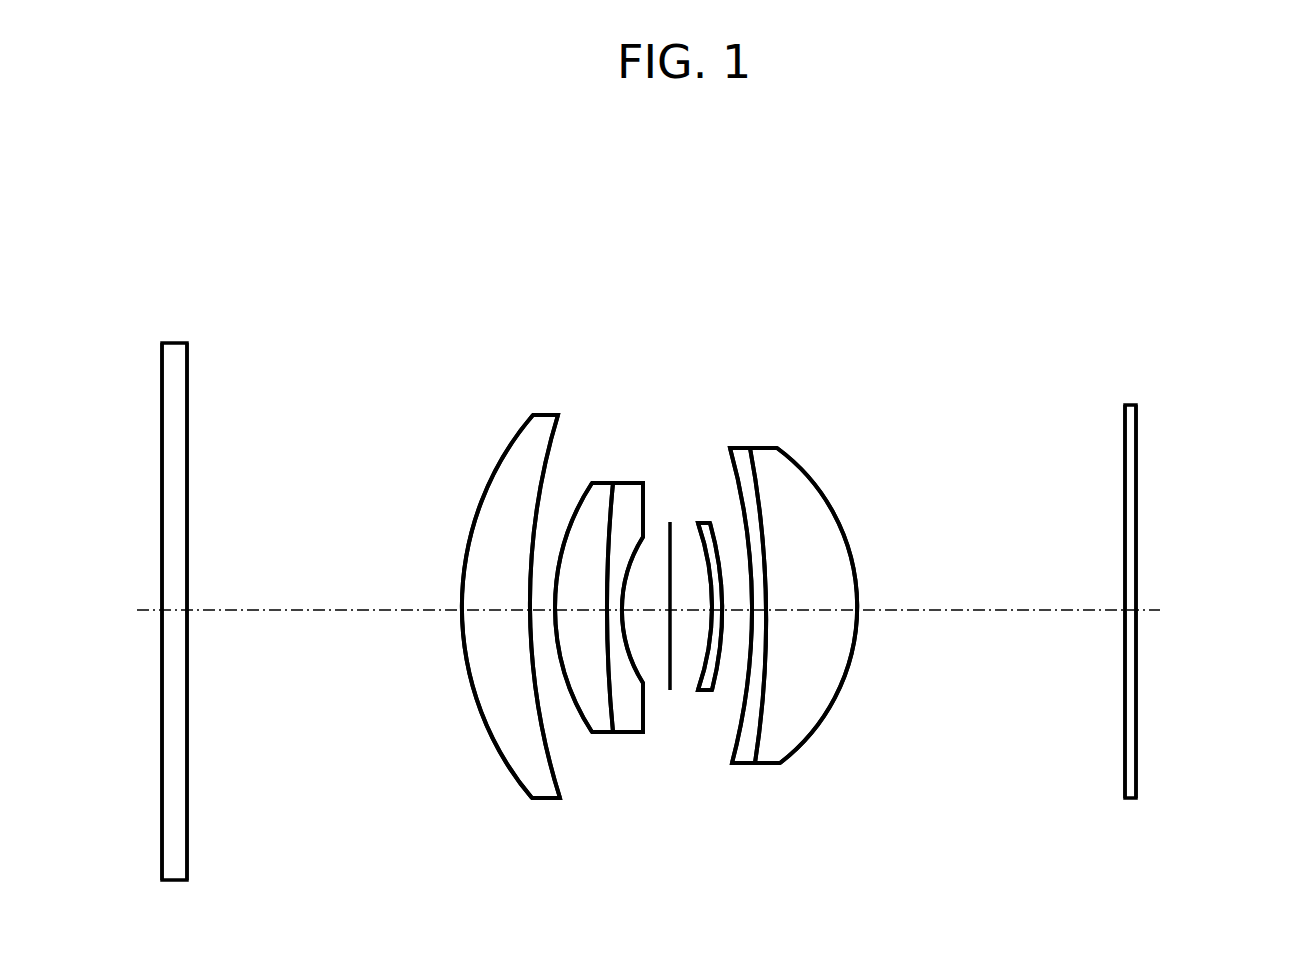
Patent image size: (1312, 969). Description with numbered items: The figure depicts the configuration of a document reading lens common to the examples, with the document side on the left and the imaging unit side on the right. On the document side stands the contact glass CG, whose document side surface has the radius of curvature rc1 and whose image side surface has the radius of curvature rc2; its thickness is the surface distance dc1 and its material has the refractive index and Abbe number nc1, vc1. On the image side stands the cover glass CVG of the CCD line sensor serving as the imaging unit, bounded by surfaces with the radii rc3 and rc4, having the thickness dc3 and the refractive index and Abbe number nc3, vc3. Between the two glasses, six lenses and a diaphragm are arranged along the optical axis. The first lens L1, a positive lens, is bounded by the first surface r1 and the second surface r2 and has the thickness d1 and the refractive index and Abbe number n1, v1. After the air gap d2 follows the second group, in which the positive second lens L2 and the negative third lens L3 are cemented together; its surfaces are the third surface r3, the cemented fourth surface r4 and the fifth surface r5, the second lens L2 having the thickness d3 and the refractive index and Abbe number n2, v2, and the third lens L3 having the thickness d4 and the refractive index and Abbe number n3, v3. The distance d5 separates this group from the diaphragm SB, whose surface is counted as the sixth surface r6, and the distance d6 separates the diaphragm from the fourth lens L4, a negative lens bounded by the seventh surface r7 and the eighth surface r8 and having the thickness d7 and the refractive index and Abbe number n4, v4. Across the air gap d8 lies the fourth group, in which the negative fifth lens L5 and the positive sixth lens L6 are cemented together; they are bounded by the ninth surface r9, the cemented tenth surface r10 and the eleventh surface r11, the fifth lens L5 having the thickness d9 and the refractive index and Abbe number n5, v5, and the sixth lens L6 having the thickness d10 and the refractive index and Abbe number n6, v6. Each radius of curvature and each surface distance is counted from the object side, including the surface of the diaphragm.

The contact glass CG is at (203, 283).
The radius of curvature of document side surface of contact glass rc1 is at (161, 375).
The radius of curvature of image side surface of contact glass rc2 is at (188, 362).
The surface distance of contact glass dc1 is at (180, 443).
The contact glass refractive index and Abbe number nc1, vc1 is at (183, 835).
The cover glass CVG is at (1145, 373).
The radius of curvature of document side surface of cover glass rc3 is at (1124, 423).
The radius of curvature of image side surface of cover glass rc4 is at (1136, 430).
The surface distance of cover glass dc3 is at (1132, 520).
The cover glass refractive index and Abbe number nc3, vc3 is at (1126, 788).
The first lens L1 is at (543, 414).
The second lens L2 is at (597, 482).
The third lens L3 is at (632, 482).
The fourth lens L4 is at (702, 522).
The fifth lens L5 is at (742, 449).
The sixth lens L6 is at (783, 458).
The diaphragm SB is at (670, 525).
The radius of curvature of first surface r1 is at (512, 433).
The radius of curvature of second surface r2 is at (556, 430).
The radius of curvature of third surface r3 is at (589, 495).
The radius of curvature of fourth surface r4 is at (611, 486).
The radius of curvature of fifth surface r5 is at (642, 545).
The radius of curvature of sixth surface r6 is at (669, 568).
The radius of curvature of seventh surface r7 is at (699, 535).
The radius of curvature of eighth surface r8 is at (716, 540).
The radius of curvature of ninth surface r9 is at (731, 465).
The radius of curvature of tenth surface r10 is at (753, 465).
The radius of curvature of eleventh surface r11 is at (813, 482).
The surface distance between first and second surfaces d1 is at (480, 610).
The surface distance between second and third surfaces d2 is at (548, 608).
The surface distance between third and fourth surfaces d3 is at (583, 608).
The surface distance between fourth and fifth surfaces d4 is at (613, 615).
The surface distance between fifth and sixth surfaces d5 is at (640, 612).
The surface distance between sixth and seventh surfaces d6 is at (688, 612).
The surface distance between seventh and eighth surfaces d7 is at (717, 607).
The surface distance between eighth and ninth surfaces d8 is at (740, 611).
The surface distance between ninth and tenth surfaces d9 is at (760, 606).
The surface distance between tenth and eleventh surfaces d10 is at (810, 606).
The first lens refractive index and Abbe number n1, v1 is at (521, 767).
The second lens refractive index and Abbe number n2, v2 is at (602, 731).
The third lens refractive index and Abbe number n3, v3 is at (635, 730).
The fourth lens refractive index and Abbe number n4, v4 is at (707, 689).
The fifth lens refractive index and Abbe number n5, v5 is at (740, 762).
The sixth lens refractive index and Abbe number n6, v6 is at (821, 720).